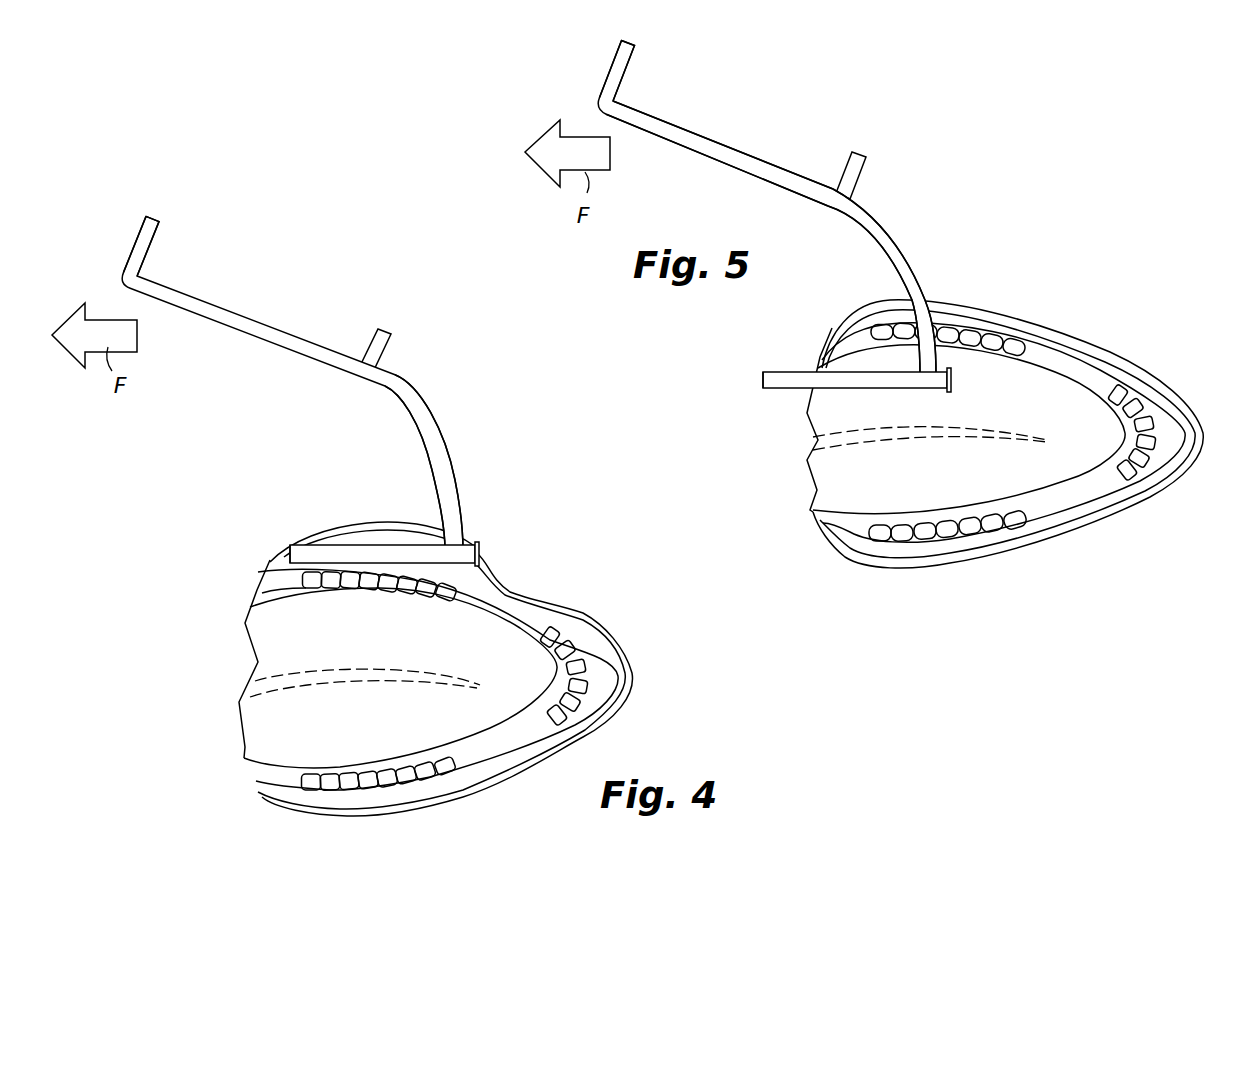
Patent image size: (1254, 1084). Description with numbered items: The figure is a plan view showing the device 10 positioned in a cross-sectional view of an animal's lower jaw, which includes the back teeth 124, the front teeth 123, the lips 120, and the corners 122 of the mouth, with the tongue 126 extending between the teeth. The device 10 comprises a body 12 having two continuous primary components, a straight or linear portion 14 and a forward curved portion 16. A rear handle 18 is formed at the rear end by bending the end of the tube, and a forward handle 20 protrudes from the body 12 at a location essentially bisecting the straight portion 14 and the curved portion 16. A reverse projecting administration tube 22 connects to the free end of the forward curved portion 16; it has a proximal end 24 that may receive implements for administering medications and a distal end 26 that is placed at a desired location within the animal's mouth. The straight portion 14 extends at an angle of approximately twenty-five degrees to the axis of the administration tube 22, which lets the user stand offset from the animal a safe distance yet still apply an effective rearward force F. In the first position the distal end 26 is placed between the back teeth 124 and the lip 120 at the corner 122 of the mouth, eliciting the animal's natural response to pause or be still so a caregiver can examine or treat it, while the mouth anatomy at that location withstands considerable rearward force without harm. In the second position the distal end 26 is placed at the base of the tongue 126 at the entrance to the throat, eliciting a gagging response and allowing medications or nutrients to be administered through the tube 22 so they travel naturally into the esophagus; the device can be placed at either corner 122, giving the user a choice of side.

In FIG. 4, the device 10 is at (314, 383).
In FIG. 5, the device 10 is at (830, 209).
In FIG. 4, the body 12 is at (314, 383).
In FIG. 5, the body 12 is at (791, 209).
In FIG. 5, the straight portion 14 is at (705, 145).
In FIG. 4, the forward curved portion 16 is at (433, 446).
In FIG. 5, the forward curved portion 16 is at (904, 257).
In FIG. 4, the rear handle 18 is at (147, 238).
In FIG. 5, the rear handle 18 is at (619, 68).
In FIG. 4, the forward handle 20 is at (379, 355).
In FIG. 5, the forward handle 20 is at (855, 177).
In FIG. 4, the administration tube 22 is at (404, 550).
In FIG. 5, the administration tube 22 is at (845, 381).
In FIG. 4, the proximal end 24 is at (477, 544).
In FIG. 5, the proximal end 24 is at (952, 380).
In FIG. 4, the distal end 26 is at (277, 548).
In FIG. 5, the distal end 26 is at (764, 389).
In FIG. 4, the lips 120 is at (282, 550).
In FIG. 5, the lips 120 is at (970, 307).
In FIG. 4, the corners of the mouth 122 is at (267, 566).
In FIG. 5, the corners of the mouth 122 is at (840, 325).
In FIG. 4, the front teeth 123 is at (574, 657).
In FIG. 5, the front teeth 123 is at (1150, 413).
In FIG. 4, the back teeth 124 is at (333, 580).
In FIG. 5, the back teeth 124 is at (905, 328).
In FIG. 4, the tongue 126 is at (468, 670).
In FIG. 5, the tongue 126 is at (945, 497).